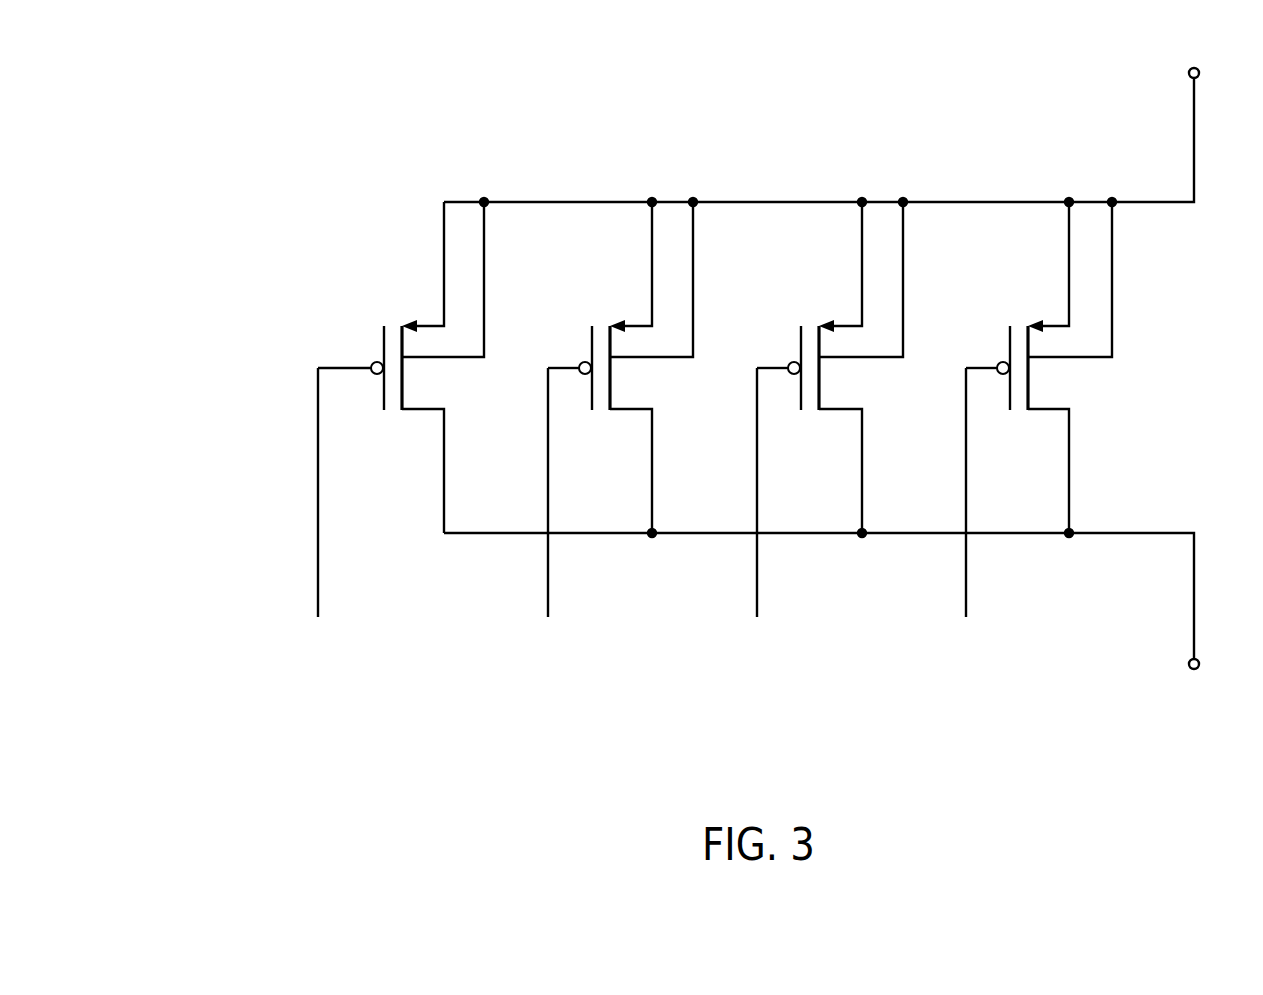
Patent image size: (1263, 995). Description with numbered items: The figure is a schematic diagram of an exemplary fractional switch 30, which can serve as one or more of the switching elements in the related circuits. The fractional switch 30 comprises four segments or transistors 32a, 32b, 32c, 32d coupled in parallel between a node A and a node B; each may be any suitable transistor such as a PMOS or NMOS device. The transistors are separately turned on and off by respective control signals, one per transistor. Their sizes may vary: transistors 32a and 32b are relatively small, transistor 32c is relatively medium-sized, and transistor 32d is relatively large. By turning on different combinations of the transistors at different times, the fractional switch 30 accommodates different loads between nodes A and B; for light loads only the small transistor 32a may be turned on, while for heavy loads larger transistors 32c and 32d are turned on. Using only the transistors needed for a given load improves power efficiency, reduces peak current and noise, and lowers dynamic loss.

The fractional switch 30 is at (285, 142).
The transistor 32a is at (368, 333).
The transistor 32b is at (576, 333).
The transistor 32c is at (786, 333).
The transistor 32d is at (994, 333).